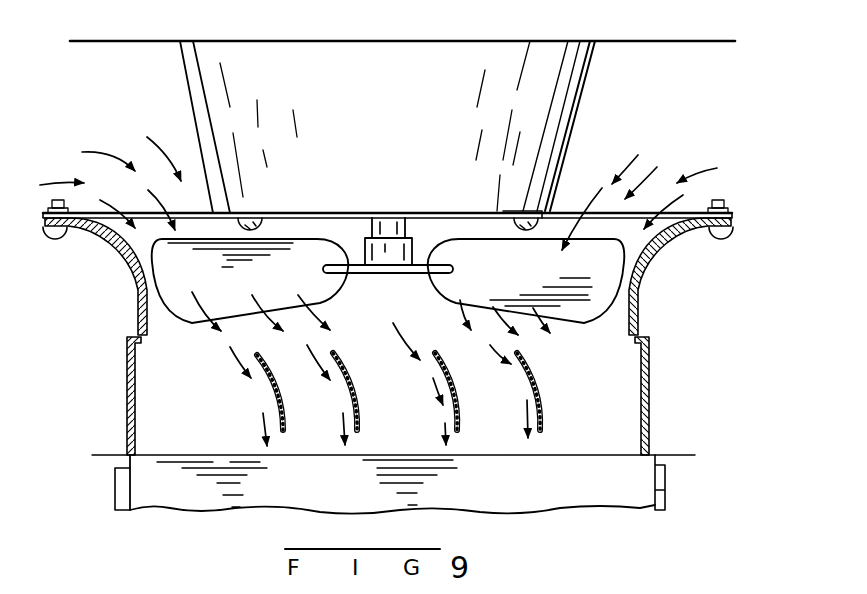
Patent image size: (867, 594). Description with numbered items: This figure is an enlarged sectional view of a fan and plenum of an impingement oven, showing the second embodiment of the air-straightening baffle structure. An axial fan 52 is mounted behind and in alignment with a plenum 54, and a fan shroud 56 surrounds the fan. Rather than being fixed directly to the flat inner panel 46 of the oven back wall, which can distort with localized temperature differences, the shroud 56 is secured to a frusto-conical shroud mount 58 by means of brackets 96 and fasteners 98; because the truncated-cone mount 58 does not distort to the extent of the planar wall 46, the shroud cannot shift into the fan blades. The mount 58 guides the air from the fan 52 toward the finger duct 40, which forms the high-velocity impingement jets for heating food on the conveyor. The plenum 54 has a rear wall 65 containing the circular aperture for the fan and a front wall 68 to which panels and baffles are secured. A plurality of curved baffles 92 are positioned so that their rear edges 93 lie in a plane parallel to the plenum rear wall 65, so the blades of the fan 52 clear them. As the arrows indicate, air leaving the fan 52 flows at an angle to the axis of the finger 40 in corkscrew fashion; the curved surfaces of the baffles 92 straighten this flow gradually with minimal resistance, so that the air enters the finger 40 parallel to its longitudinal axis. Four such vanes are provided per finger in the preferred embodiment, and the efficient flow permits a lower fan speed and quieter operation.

The finger duct 40 is at (665, 478).
The inner panel 46 is at (619, 43).
The axial fan 52 is at (186, 309).
The plenum 54 is at (127, 382).
The fan shroud 56 is at (648, 260).
The frusto-conical shroud mount 58 is at (568, 96).
The plenum rear wall 65 is at (637, 330).
The plenum front wall 68 is at (548, 455).
The curved baffle 92 is at (282, 412).
The rear edge of baffle 93 is at (253, 354).
The bracket 96 is at (216, 211).
The fastener 98 is at (717, 230).